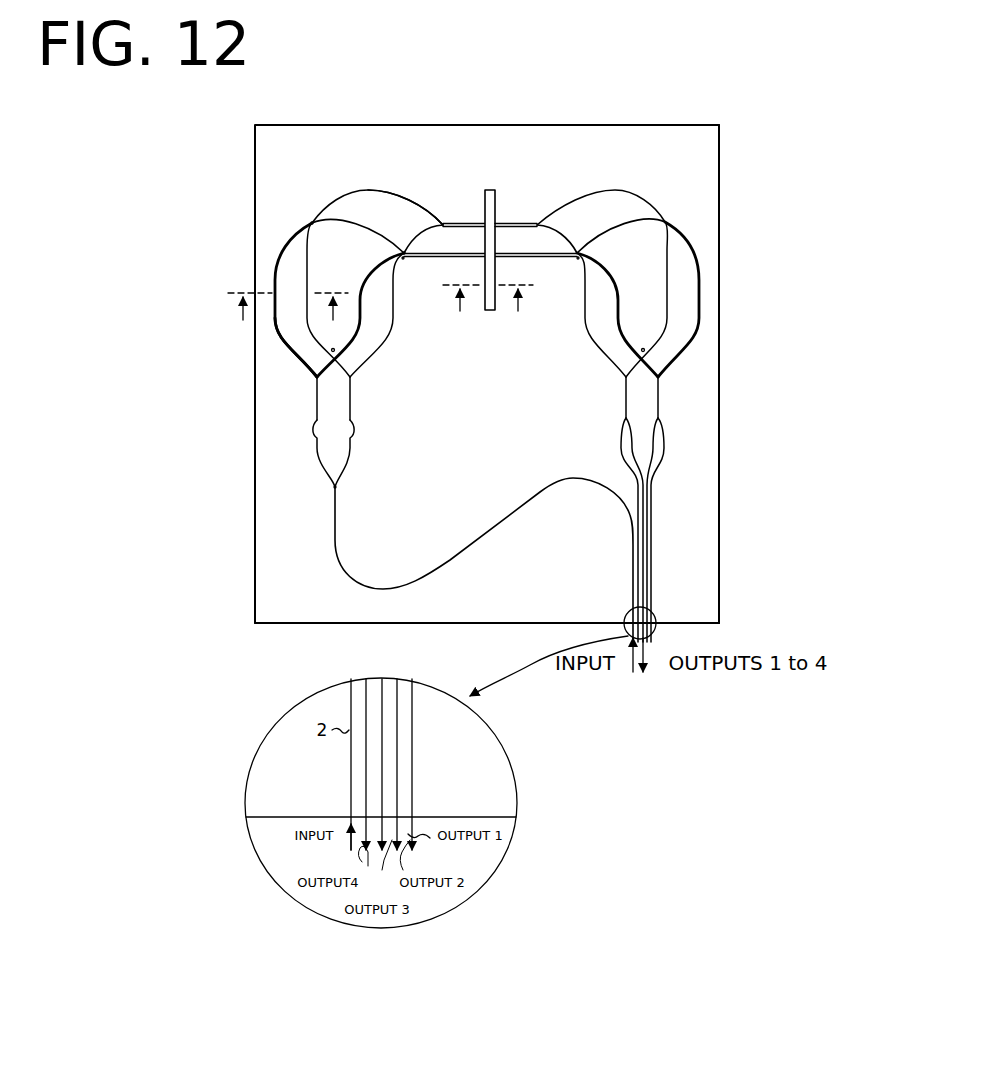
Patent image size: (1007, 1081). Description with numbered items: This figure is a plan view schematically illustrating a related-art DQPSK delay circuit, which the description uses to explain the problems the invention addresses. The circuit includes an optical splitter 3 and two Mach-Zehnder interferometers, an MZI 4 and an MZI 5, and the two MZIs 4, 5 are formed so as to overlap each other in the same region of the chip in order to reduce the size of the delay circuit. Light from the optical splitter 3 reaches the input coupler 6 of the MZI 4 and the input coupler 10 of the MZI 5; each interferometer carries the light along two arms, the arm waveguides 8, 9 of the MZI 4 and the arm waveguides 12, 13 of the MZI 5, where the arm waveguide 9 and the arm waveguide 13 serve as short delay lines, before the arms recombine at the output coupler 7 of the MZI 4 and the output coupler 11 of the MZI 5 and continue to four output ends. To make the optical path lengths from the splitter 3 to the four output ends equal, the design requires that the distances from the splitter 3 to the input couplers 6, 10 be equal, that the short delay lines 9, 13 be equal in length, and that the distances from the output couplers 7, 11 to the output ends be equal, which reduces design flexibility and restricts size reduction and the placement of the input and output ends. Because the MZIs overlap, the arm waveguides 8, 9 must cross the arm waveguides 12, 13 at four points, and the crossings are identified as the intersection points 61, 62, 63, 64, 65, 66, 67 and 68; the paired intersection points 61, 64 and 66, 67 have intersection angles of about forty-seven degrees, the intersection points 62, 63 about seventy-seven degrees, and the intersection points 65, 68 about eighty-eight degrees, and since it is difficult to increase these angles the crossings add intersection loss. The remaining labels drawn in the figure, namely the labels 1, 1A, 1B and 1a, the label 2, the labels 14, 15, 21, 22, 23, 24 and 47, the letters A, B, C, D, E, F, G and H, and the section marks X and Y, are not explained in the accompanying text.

The optical waveguide device 1 is at (565, 112).
The first Mach-Zehnder interferometer section 1A is at (402, 163).
The second Mach-Zehnder interferometer section 1B is at (722, 200).
The substrate edge 1a is at (722, 266).
The input waveguide 2 is at (430, 581).
The optical splitter 3 is at (333, 490).
The MZI 4 is at (273, 333).
The MZI 5 is at (331, 198).
The input coupler 6 is at (316, 395).
The output coupler 7 is at (660, 398).
The arm waveguide 8 is at (360, 226).
The short delay line 9 is at (440, 258).
The input coupler 10 is at (352, 395).
The output coupler 11 is at (626, 398).
The arm waveguide 12 is at (420, 214).
The short delay line 13 is at (420, 234).
The waveguide taper 14 is at (314, 439).
The waveguide taper 15 is at (354, 439).
The output waveguide 1 21 is at (414, 778).
The output waveguide 2 22 is at (399, 752).
The output waveguide 3 23 is at (380, 790).
The output waveguide 4 24 is at (364, 762).
The thin film heater / phase plate 47 is at (496, 196).
The intersection point 61 is at (310, 221).
The intersection point 62 is at (402, 251).
The intersection point 63 is at (577, 251).
The intersection point 64 is at (665, 220).
The intersection point 65 is at (336, 348).
The intersection point 66 is at (403, 262).
The intersection point 67 is at (575, 262).
The intersection point 68 is at (643, 348).
The waveguide arm A is at (273, 278).
The waveguide arm B is at (362, 283).
The waveguide arm C is at (701, 300).
The waveguide arm D is at (619, 290).
The waveguide arm E is at (308, 267).
The waveguide arm F is at (393, 334).
The waveguide arm G is at (666, 268).
The waveguide arm H is at (604, 347).
The section line X- X is at (288, 308).
The section line Y- Y is at (489, 302).